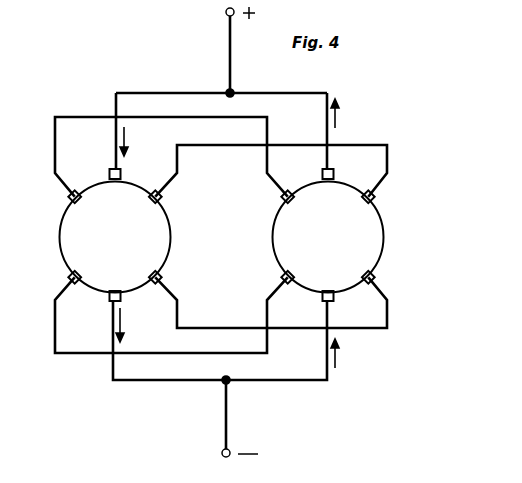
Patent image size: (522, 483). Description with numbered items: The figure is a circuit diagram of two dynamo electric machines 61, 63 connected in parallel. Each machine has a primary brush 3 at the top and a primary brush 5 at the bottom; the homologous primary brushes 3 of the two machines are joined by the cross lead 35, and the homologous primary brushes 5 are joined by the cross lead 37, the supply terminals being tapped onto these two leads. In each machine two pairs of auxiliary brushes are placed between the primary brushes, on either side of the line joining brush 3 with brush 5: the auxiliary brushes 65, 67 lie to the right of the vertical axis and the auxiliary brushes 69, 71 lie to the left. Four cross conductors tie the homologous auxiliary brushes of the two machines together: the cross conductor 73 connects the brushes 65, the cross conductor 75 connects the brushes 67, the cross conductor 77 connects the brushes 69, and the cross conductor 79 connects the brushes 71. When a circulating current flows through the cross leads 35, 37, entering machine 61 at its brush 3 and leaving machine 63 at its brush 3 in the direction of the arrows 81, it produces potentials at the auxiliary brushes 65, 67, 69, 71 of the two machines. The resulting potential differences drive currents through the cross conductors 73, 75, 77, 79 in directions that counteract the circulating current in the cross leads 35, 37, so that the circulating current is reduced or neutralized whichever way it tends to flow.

The primary brush 3 is at (222, 185).
The primary brush 5 is at (222, 287).
The cross lead 35 is at (183, 72).
The cross lead 37 is at (164, 382).
The dynamo electric machine 61 is at (172, 237).
The dynamo electric machine 63 is at (382, 218).
The auxiliary brush 65 is at (254, 202).
The auxiliary brush 67 is at (255, 272).
The auxiliary brush 69 is at (188, 272).
The auxiliary brush 71 is at (187, 202).
The cross conductor 73 is at (194, 149).
The cross conductor 75 is at (212, 327).
The cross conductor 77 is at (88, 335).
The cross conductor 79 is at (80, 98).
The arrows 81 is at (124, 131).